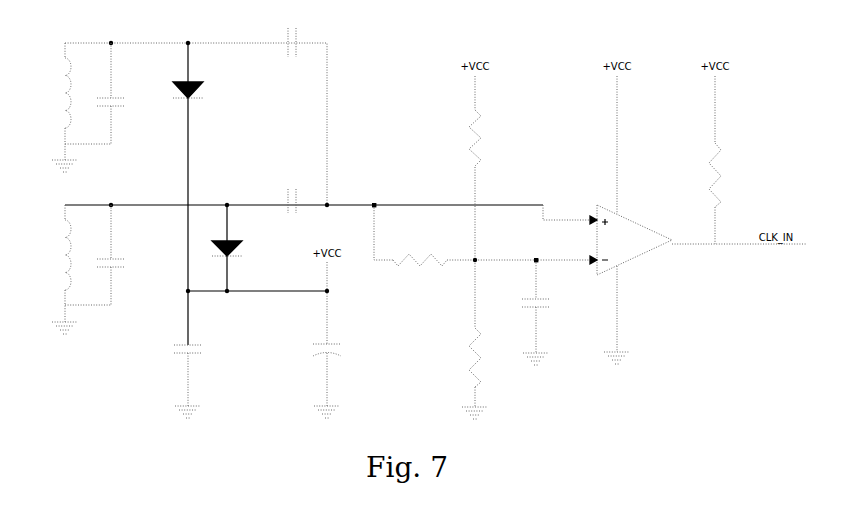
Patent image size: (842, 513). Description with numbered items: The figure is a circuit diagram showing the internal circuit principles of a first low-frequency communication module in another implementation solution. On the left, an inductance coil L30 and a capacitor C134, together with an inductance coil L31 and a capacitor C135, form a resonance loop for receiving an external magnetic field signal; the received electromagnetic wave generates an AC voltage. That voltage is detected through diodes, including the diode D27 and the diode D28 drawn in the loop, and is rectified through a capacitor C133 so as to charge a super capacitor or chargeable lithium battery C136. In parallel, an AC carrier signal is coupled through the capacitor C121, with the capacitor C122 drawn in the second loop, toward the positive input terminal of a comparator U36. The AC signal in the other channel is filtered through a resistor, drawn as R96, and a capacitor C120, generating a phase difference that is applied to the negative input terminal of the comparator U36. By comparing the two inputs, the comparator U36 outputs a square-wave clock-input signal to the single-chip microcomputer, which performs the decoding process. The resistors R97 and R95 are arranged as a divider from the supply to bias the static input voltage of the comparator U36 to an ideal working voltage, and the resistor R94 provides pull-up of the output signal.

The inductance coil L30 is at (65, 101).
The capacitor C134 is at (128, 93).
The diode 1N4148 D28 is at (209, 86).
The capacitor C121 is at (291, 49).
The inductance coil L31 is at (65, 263).
The capacitor C135 is at (127, 255).
The diode D27 is at (249, 248).
The capacitor 380P C122 is at (296, 207).
The capacitor C133 is at (206, 343).
The super capacitor or chargeable lithium battery C136 is at (355, 359).
The resistor 100K R96 is at (424, 253).
The resistor R97 is at (488, 138).
The resistor R95 is at (488, 357).
The resistor R94 is at (729, 175).
The capacitor C120 is at (550, 298).
The comparator U36 is at (634, 241).